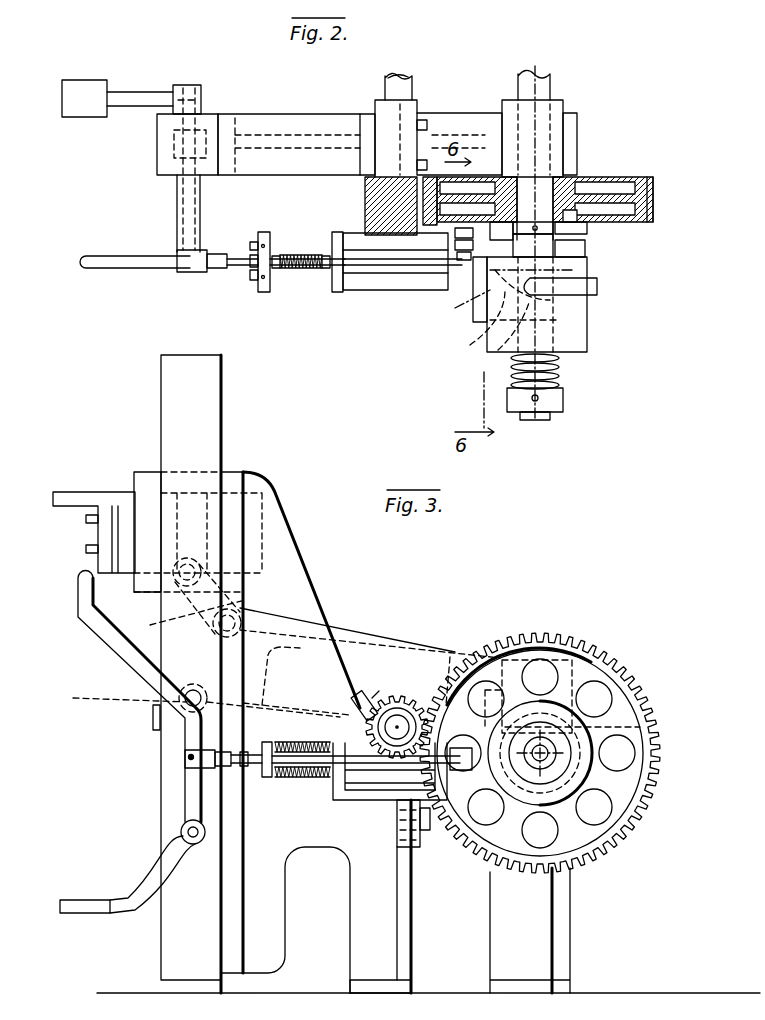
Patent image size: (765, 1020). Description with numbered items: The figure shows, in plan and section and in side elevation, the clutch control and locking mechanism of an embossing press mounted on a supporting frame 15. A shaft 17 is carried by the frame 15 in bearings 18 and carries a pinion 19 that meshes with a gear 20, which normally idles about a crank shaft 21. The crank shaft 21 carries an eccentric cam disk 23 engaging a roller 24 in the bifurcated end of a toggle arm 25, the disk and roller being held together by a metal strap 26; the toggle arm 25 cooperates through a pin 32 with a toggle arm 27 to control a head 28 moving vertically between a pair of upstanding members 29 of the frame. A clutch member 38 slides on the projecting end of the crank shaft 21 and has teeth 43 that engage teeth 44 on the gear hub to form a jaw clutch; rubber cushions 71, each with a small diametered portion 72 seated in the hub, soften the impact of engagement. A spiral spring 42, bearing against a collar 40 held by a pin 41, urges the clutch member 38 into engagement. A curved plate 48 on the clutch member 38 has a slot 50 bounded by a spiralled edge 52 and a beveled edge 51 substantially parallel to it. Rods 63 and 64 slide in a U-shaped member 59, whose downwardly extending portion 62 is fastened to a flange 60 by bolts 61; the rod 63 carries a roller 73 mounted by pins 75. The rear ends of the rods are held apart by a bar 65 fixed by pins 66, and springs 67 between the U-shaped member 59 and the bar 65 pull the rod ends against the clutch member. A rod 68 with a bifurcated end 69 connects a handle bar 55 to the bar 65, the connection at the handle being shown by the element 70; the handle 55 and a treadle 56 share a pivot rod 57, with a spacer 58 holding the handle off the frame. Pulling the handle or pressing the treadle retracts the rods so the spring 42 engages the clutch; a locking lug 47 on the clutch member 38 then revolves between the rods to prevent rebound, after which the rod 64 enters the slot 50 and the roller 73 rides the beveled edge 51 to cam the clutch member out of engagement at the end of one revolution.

In FIG. 2, the supporting frame 15 is at (296, 114).
In FIG. 3, the supporting frame 15 is at (365, 899).
In FIG. 2, the shaft 17 is at (412, 80).
In FIG. 3, the shaft 17 is at (397, 714).
In FIG. 2, the bearings 18 is at (418, 117).
In FIG. 3, the bearings 18 is at (367, 692).
In FIG. 2, the pinion 19 is at (366, 190).
In FIG. 3, the pinion 19 is at (408, 708).
In FIG. 2, the gear 20 is at (636, 179).
In FIG. 3, the gear 20 is at (650, 712).
In FIG. 2, the crank shaft 21 is at (538, 72).
In FIG. 3, the crank shaft 21 is at (585, 790).
In FIG. 3, the eccentric cam disk 23 is at (548, 868).
In FIG. 3, the roller 24 is at (598, 650).
In FIG. 3, the toggle arm 25 is at (455, 655).
In FIG. 3, the metal strap 26 is at (642, 722).
In FIG. 3, the toggle arm 27 is at (185, 598).
In FIG. 3, the head 28 is at (226, 475).
In FIG. 2, the upstanding members 29 is at (158, 148).
In FIG. 3, the upstanding members 29 is at (222, 395).
In FIG. 3, the pin 32 is at (244, 625).
In FIG. 2, the clutch member 38 is at (590, 338).
In FIG. 3, the clutch member 38 is at (560, 762).
In FIG. 2, the collar 40 is at (564, 400).
In FIG. 2, the pin 41 is at (534, 402).
In FIG. 3, the pin 41 is at (575, 757).
In FIG. 2, the spiral spring 42 is at (560, 372).
In FIG. 2, the teeth 43 is at (588, 250).
In FIG. 2, the teeth 44 is at (588, 231).
In FIG. 2, the locking lug 47 is at (598, 290).
In FIG. 3, the locking lug 47 is at (589, 712).
In FIG. 2, the curved plate 48 is at (476, 322).
In FIG. 3, the curved plate 48 is at (543, 770).
In FIG. 2, the slot 50 is at (460, 306).
In FIG. 2, the beveled edge 51 is at (578, 270).
In FIG. 2, the spiralled edge 52 is at (478, 360).
In FIG. 2, the handle bar 55 is at (112, 257).
In FIG. 3, the handle bar 55 is at (86, 603).
In FIG. 2, the treadle 56 is at (150, 72).
In FIG. 3, the treadle 56 is at (124, 890).
In FIG. 2, the pivot rod 57 is at (193, 85).
In FIG. 3, the pivot rod 57 is at (193, 845).
In FIG. 2, the spacer 58 is at (183, 210).
In FIG. 2, the U-shaped member 59 is at (348, 268).
In FIG. 3, the U-shaped member 59 is at (376, 792).
In FIG. 3, the flange 60 is at (412, 899).
In FIG. 3, the bolts 61 is at (426, 832).
In FIG. 3, the downwardly extending portion 62 is at (397, 835).
In FIG. 2, the rod 63 is at (356, 238).
In FIG. 2, the rod 64 is at (378, 280).
In FIG. 3, the rod 64 is at (402, 766).
In FIG. 2, the bar 65 is at (266, 235).
In FIG. 3, the bar 65 is at (268, 744).
In FIG. 2, the pins 66 is at (262, 244).
In FIG. 2, the springs 67 is at (306, 270).
In FIG. 3, the springs 67 is at (306, 745).
In FIG. 2, the rod 68 is at (236, 267).
In FIG. 3, the rod 68 is at (248, 768).
In FIG. 2, the bifurcated end 69 is at (196, 272).
In FIG. 3, the bifurcated end 69 is at (192, 766).
In FIG. 3, the pin 70 is at (188, 756).
In FIG. 2, the rubber cushions 71 is at (521, 240).
In FIG. 2, the small diametered portion 72 is at (578, 190).
In FIG. 2, the roller 73 is at (462, 240).
In FIG. 3, the roller 73 is at (464, 746).
In FIG. 2, the pins 75 is at (466, 252).